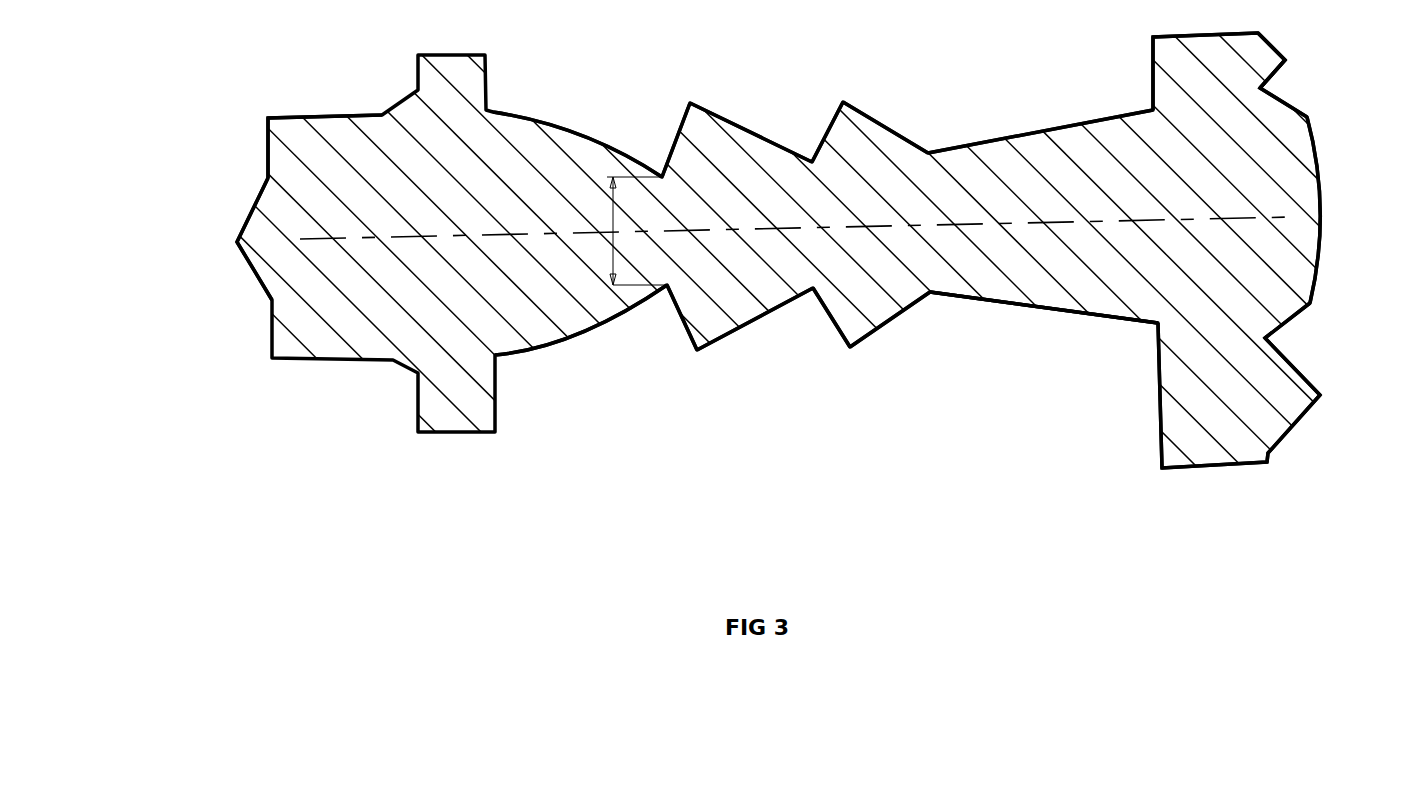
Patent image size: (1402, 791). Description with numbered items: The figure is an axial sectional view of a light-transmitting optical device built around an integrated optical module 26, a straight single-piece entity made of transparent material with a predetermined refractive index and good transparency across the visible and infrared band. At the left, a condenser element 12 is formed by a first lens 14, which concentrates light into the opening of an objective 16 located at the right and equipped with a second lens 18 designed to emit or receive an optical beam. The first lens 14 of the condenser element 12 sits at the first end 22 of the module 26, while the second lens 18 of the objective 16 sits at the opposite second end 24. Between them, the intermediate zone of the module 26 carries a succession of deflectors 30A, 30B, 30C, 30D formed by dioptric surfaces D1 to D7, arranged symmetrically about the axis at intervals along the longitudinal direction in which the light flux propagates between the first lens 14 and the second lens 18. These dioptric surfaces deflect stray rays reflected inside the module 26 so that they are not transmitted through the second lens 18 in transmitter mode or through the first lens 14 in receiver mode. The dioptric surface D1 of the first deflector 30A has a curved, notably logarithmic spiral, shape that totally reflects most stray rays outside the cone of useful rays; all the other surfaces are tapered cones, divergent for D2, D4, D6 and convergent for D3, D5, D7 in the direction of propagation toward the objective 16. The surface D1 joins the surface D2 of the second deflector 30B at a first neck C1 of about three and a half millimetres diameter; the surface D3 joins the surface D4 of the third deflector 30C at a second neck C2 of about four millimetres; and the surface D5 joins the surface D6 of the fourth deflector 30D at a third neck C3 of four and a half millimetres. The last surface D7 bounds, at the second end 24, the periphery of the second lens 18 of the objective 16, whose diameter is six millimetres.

The condenser element 12 is at (216, 300).
The first lens 14 is at (237, 242).
The objective 16 is at (1319, 341).
The second lens 18 is at (1318, 263).
The first end 22 is at (268, 140).
The second end 24 is at (1310, 117).
The integrated optical module 26 is at (463, 539).
The first deflector 30A is at (565, 351).
The second deflector 30B is at (716, 362).
The third deflector 30C is at (865, 360).
The fourth deflector 30D is at (1084, 342).
The dioptric surface D1 is at (563, 128).
The dioptric surface D2 is at (680, 132).
The dioptric surface D3 is at (743, 127).
The dioptric surface D4 is at (827, 128).
The dioptric surface D5 is at (895, 132).
The dioptric surface D6 is at (1043, 132).
The dioptric surface D7 is at (1283, 102).
The first neck C1 is at (662, 290).
The second neck C2 is at (813, 292).
The third neck C3 is at (932, 295).